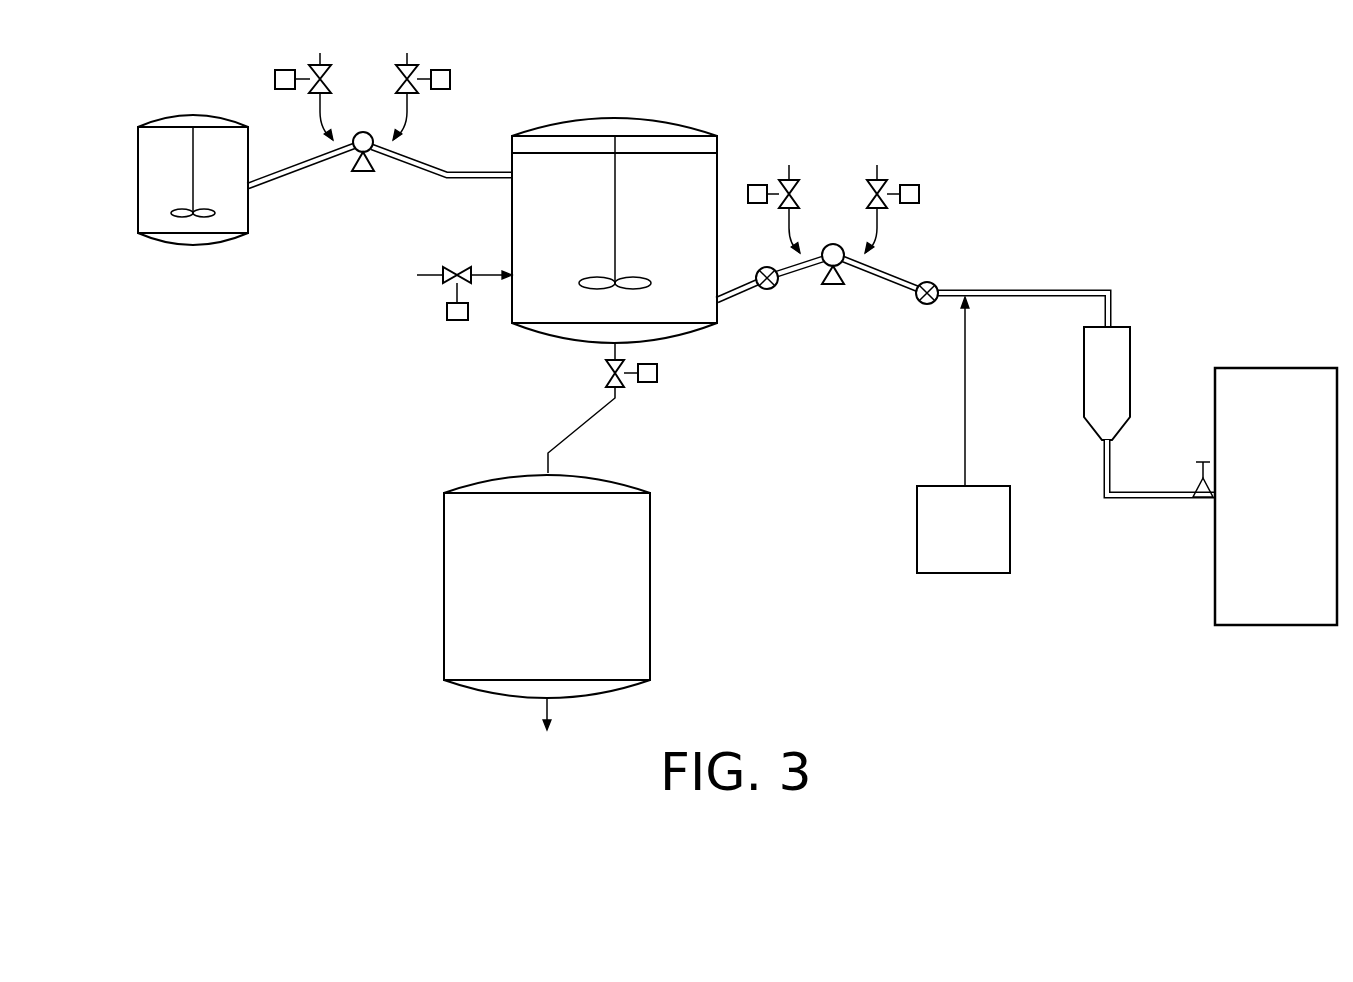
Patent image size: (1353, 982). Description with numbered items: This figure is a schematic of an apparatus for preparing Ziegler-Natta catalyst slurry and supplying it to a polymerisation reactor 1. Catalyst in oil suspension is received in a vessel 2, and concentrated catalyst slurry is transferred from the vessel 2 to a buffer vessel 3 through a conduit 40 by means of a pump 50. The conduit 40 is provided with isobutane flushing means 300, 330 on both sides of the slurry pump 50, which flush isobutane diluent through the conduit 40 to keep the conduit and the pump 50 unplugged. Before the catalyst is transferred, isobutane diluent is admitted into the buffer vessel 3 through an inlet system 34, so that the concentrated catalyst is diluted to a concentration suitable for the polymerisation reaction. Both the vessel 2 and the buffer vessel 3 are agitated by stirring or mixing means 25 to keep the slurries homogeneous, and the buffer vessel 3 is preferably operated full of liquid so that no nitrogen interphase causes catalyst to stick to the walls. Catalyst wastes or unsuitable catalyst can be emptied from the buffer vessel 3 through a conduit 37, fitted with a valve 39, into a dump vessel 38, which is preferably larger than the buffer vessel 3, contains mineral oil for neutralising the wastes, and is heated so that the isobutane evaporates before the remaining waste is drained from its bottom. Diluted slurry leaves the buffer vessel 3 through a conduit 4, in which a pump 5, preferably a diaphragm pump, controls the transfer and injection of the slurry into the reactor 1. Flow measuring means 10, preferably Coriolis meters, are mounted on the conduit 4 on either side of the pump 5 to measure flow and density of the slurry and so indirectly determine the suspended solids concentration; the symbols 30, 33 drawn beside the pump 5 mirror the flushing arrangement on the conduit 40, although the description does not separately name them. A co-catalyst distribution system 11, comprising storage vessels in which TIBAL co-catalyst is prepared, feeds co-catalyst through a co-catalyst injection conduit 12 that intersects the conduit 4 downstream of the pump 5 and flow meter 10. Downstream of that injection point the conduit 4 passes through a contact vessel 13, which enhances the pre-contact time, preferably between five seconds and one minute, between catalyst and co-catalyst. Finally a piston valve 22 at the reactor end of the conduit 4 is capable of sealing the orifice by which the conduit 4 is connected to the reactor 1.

The reactor 1 is at (1283, 370).
The vessel 2 is at (137, 158).
The buffer vessel 3 is at (515, 228).
The conduit 4 is at (740, 300).
The pump 5 is at (828, 287).
The flow measuring means 10 is at (770, 290).
The co-catalyst distribution system 11 is at (977, 544).
The co-catalyst injection conduit 12 is at (965, 405).
The contact vessel 13 is at (1132, 368).
The piston valve 22 is at (1200, 460).
The stirring or mixing means 25 is at (213, 208).
The control valve 30 is at (755, 185).
The control valve 33 is at (910, 185).
The inlet system 34 is at (457, 321).
The conduit 37 is at (587, 424).
The dump vessel 38 is at (561, 596).
The valve 39 is at (657, 373).
The conduit 40 is at (271, 179).
The pump 50 is at (360, 174).
The isobutane flushing means 300 is at (285, 70).
The isobutane flushing means 330 is at (440, 70).